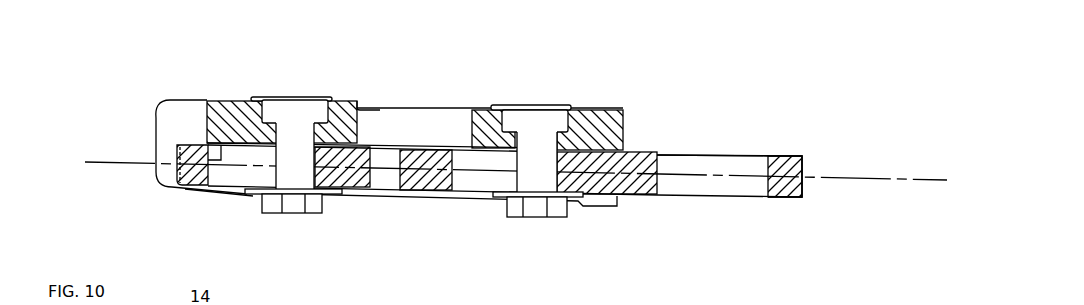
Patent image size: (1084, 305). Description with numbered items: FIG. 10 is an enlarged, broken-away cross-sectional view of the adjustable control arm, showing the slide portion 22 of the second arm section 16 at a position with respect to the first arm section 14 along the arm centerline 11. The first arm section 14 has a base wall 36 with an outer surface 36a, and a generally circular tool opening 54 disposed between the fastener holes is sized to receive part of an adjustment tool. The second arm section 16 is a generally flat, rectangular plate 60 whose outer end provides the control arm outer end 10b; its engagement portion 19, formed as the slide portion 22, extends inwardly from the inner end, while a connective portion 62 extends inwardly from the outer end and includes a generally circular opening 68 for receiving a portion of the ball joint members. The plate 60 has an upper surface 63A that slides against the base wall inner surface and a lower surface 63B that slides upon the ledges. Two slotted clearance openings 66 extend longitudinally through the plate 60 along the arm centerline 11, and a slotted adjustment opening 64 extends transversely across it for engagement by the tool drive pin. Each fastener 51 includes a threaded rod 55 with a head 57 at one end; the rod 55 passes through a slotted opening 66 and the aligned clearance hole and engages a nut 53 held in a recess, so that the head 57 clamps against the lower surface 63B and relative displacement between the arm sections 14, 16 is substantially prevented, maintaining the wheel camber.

The control arm outer end 10b is at (799, 151).
The arm centerline 11 is at (907, 178).
The first arm section 14 is at (232, 72).
The second arm section 16 is at (708, 221).
The engagement portion 19 is at (357, 201).
The slide portion 22 is at (193, 185).
The base wall 36 is at (359, 99).
The outer surface of base wall 36a is at (602, 107).
The fastener 51 is at (270, 216).
The nut 53 is at (323, 107).
The tool opening 54 is at (377, 110).
The rod 55 is at (250, 188).
The head 57 is at (292, 208).
The plate 60 is at (787, 199).
The connective portion 62 is at (652, 199).
The upper surface 63A is at (645, 153).
The lower surface 63B is at (417, 198).
The slotted adjustment opening 64 is at (393, 191).
The slotted clearance opening 66 is at (218, 163).
The circular opening 68 is at (768, 168).